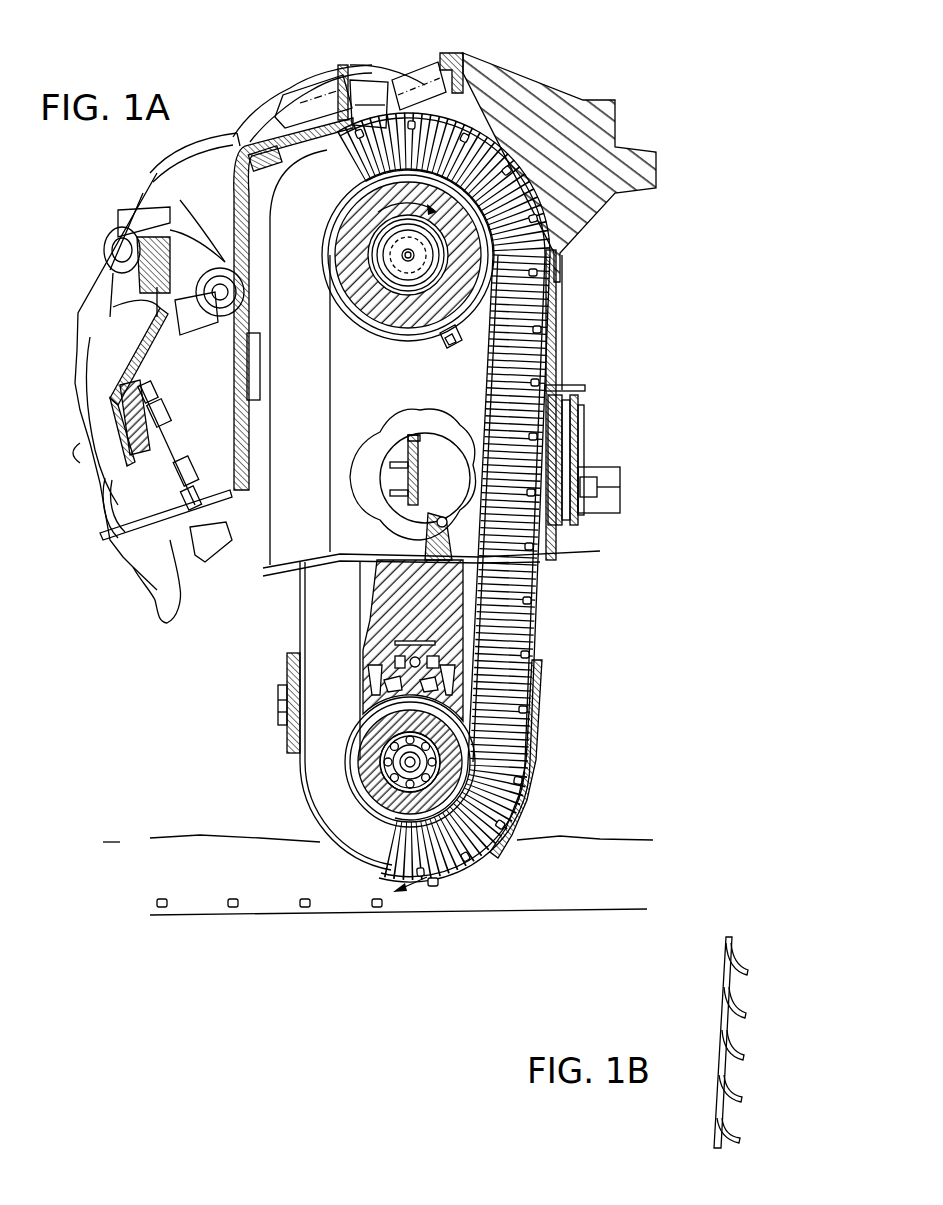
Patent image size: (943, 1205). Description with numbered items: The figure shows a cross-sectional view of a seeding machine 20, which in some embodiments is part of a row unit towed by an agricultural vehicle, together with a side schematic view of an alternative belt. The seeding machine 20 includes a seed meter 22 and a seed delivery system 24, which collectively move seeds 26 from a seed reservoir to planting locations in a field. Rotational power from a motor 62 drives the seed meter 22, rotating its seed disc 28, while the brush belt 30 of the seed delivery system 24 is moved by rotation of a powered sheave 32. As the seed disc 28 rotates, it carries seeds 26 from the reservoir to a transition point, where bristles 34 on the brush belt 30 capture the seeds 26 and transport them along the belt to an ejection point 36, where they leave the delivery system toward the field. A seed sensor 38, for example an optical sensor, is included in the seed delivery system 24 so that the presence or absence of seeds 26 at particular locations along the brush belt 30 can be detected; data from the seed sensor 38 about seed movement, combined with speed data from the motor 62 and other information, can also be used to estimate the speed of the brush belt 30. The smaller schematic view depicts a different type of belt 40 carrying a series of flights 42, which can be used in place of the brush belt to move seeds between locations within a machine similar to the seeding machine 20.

In FIG. 1A, the seeding machine 20 is at (726, 129).
In FIG. 1A, the seed meter 22 is at (118, 592).
In FIG. 1A, the seed delivery system 24 is at (565, 768).
In FIG. 1A, the seeds 26 is at (505, 155).
In FIG. 1A, the seed disc 28 is at (208, 130).
In FIG. 1A, the brush belt 30 is at (478, 408).
In FIG. 1A, the powered sheave 32 is at (372, 87).
In FIG. 1A, the bristles 34 is at (557, 355).
In FIG. 1A, the ejection point 36 is at (465, 884).
In FIG. 1A, the seed sensor 38 is at (588, 447).
In FIG. 1B, the belt 40 is at (692, 996).
In FIG. 1B, the flights 42 is at (745, 963).
In FIG. 1A, the motor 62 is at (592, 267).